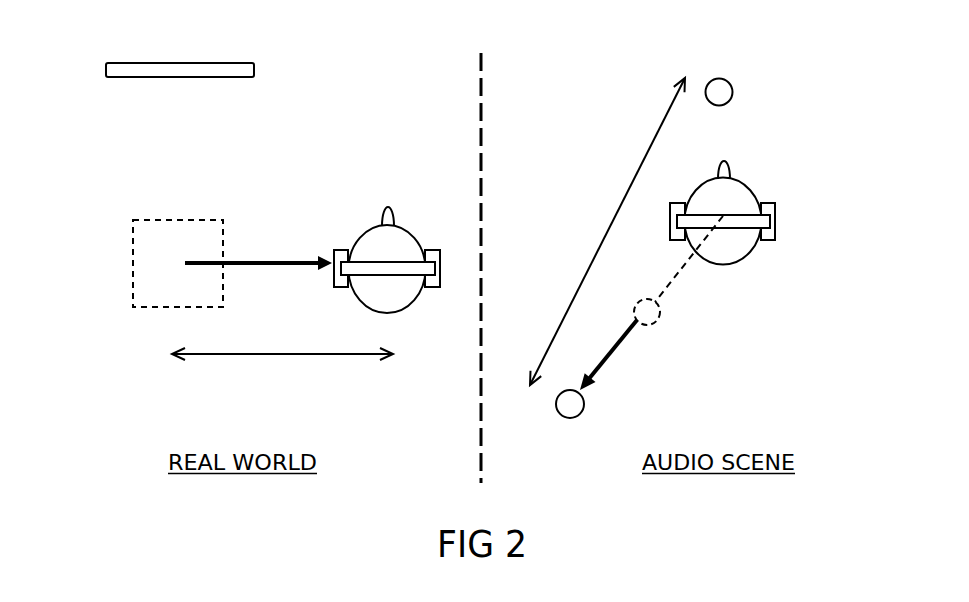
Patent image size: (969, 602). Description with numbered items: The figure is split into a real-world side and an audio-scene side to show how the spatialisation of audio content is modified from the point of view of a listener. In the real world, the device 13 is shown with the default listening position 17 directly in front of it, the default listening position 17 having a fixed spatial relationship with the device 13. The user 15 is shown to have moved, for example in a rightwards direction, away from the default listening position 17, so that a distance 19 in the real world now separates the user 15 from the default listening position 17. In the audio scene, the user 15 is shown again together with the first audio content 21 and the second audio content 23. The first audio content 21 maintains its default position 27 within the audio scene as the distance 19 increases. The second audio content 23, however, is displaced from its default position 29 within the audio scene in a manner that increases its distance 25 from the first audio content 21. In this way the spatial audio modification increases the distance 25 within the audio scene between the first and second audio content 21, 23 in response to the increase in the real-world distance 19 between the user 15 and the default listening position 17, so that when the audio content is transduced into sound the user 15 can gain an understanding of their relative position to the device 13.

The device 13 is at (172, 50).
The user 15 is at (412, 222).
The default listening position 17 is at (123, 247).
The distance 19 is at (293, 358).
The first audio content 21 is at (734, 91).
The second audio content 23 is at (588, 405).
The distance 25 is at (608, 208).
The default position 27 is at (727, 70).
The default position 29 is at (667, 322).